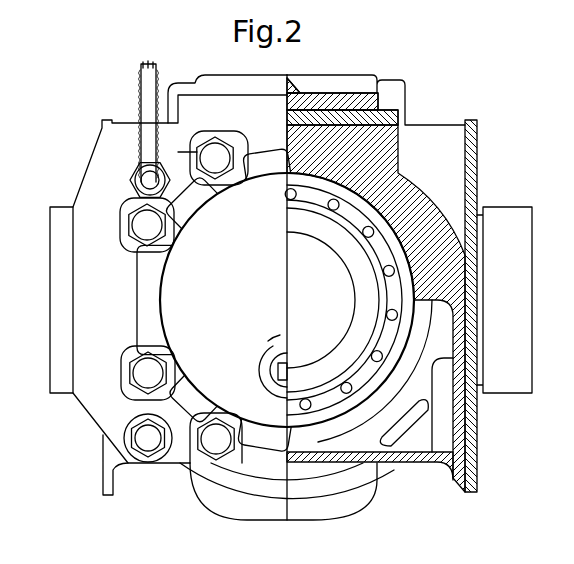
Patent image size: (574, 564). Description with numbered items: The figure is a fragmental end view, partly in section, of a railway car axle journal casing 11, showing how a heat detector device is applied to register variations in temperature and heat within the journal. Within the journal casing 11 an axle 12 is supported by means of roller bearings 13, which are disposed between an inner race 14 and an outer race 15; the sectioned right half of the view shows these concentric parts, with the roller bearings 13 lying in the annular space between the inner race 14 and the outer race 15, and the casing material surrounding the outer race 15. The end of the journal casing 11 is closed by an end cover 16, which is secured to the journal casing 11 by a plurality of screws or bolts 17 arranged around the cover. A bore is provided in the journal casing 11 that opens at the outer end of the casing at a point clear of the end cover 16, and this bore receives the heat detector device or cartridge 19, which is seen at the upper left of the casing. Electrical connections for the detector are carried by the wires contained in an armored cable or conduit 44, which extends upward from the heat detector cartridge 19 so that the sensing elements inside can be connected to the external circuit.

The axle journal casing 11 is at (88, 180).
The axle 12 is at (334, 323).
The roller bearings 13 is at (408, 268).
The inner race 14 is at (356, 261).
The outer race 15 is at (378, 204).
The end cover 16 is at (134, 315).
The screws or bolts 17 is at (213, 157).
The heat detector device or cartridge 19 is at (131, 159).
The armored cable or conduit 44 is at (140, 98).